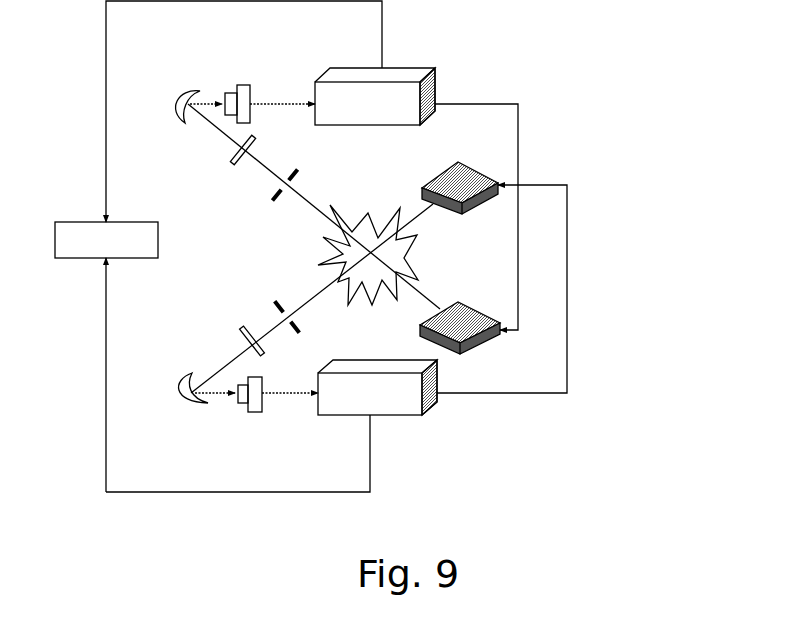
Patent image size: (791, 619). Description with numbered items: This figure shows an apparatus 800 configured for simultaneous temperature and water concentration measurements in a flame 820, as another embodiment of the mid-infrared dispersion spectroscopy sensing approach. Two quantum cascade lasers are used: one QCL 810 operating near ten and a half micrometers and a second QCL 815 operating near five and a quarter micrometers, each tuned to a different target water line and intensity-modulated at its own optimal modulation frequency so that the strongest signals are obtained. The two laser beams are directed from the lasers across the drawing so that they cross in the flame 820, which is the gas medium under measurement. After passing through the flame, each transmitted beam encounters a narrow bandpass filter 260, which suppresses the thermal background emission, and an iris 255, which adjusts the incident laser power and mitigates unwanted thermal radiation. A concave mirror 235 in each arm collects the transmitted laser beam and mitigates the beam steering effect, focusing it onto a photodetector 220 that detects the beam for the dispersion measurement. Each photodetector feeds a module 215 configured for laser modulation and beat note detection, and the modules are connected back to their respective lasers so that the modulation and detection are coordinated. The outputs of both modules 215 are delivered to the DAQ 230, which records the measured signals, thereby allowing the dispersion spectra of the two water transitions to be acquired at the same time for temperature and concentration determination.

The module 215 is at (420, 70).
The photodetector 220 is at (248, 80).
The DAQ 230 is at (128, 261).
The concave mirror 235 is at (170, 97).
The iris 255 is at (276, 200).
The narrow bandpass filter 260 is at (238, 165).
The system 800 is at (588, 478).
The QCL 810 is at (482, 170).
The QCL 815 is at (478, 347).
The flame 820 is at (420, 250).